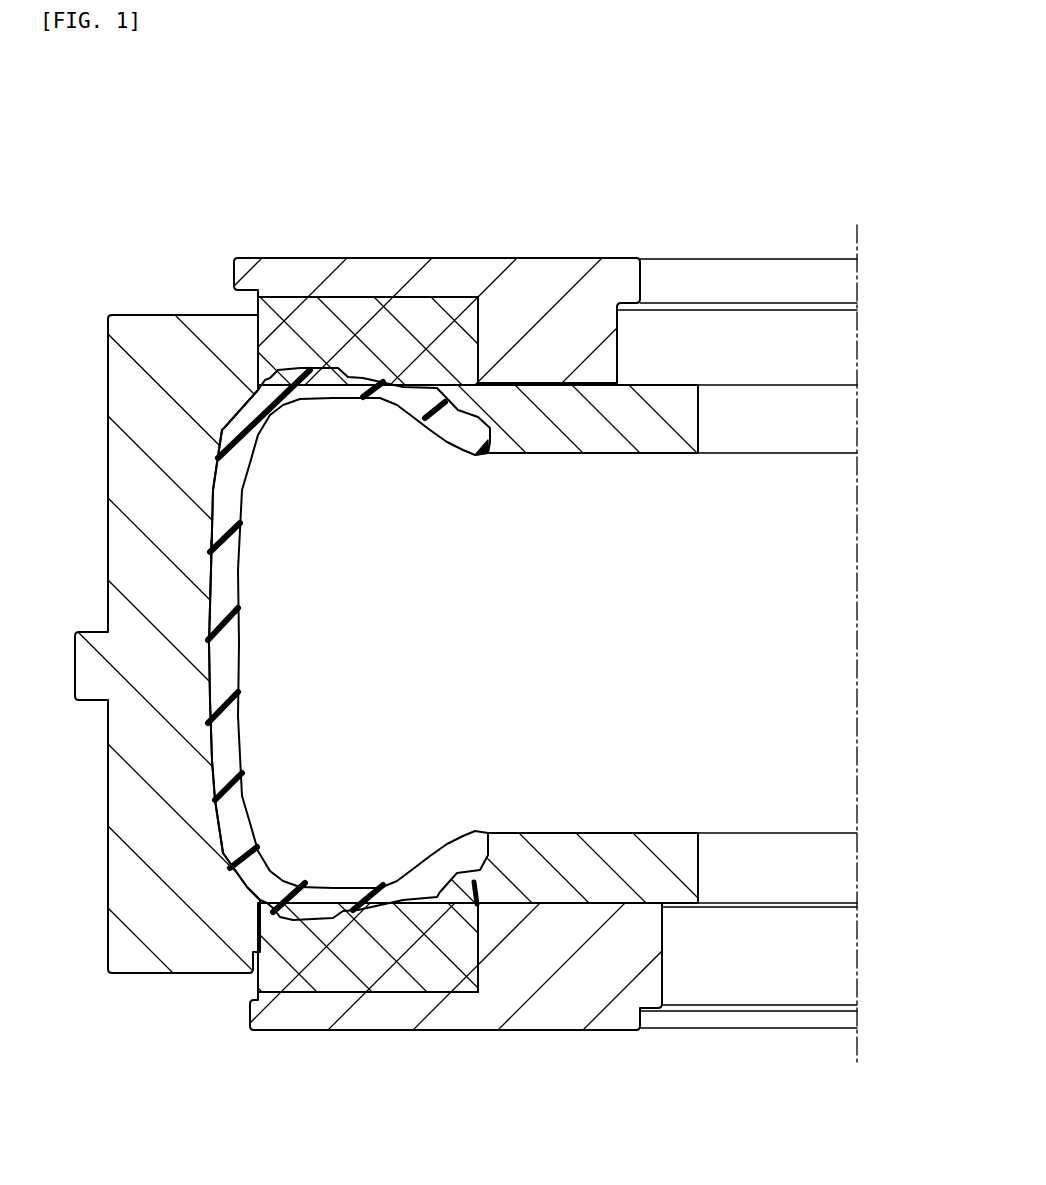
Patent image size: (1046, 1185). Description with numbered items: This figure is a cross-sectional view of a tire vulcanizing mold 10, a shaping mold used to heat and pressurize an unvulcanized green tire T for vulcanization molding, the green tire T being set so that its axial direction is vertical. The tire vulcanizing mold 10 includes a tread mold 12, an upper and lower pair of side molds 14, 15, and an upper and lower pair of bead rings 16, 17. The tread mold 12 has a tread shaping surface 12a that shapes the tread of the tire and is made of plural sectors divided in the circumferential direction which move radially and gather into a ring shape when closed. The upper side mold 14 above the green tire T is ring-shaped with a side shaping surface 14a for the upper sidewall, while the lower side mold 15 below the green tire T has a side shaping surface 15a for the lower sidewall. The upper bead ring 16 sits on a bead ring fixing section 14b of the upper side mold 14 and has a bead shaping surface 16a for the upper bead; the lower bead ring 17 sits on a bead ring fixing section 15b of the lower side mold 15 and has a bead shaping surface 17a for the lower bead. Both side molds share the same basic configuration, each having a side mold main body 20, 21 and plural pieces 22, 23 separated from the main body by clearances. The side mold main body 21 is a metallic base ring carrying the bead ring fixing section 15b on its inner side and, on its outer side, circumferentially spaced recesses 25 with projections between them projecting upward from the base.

The tire vulcanizing mold 10 is at (578, 93).
The tread mold 12 is at (128, 570).
The tread shaping surface 12a is at (214, 573).
The upper side mold 14 is at (407, 350).
The side shaping surface 14a is at (358, 400).
The bead ring fixing section 14b is at (553, 392).
The lower side mold 15 is at (483, 945).
The side shaping surface 15a is at (345, 912).
The bead ring fixing section 15b is at (570, 897).
The upper bead ring 16 is at (645, 447).
The bead shaping surface 16a is at (479, 440).
The lower bead ring 17 is at (640, 830).
The bead shaping surface 17a is at (473, 862).
The side mold main body 20 is at (447, 275).
The side mold main body 21 is at (323, 1015).
The pieces 22 is at (343, 325).
The pieces 23 is at (433, 945).
The recesses 25 is at (290, 305).
The green tire T is at (232, 680).